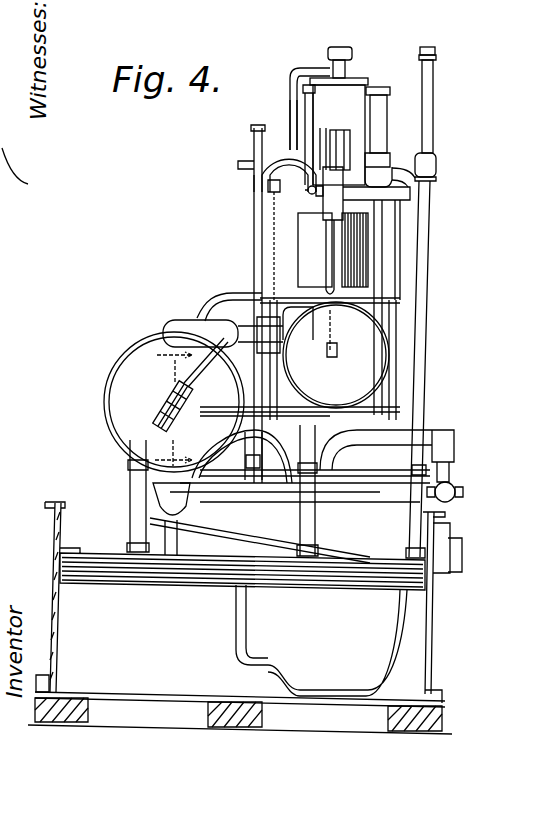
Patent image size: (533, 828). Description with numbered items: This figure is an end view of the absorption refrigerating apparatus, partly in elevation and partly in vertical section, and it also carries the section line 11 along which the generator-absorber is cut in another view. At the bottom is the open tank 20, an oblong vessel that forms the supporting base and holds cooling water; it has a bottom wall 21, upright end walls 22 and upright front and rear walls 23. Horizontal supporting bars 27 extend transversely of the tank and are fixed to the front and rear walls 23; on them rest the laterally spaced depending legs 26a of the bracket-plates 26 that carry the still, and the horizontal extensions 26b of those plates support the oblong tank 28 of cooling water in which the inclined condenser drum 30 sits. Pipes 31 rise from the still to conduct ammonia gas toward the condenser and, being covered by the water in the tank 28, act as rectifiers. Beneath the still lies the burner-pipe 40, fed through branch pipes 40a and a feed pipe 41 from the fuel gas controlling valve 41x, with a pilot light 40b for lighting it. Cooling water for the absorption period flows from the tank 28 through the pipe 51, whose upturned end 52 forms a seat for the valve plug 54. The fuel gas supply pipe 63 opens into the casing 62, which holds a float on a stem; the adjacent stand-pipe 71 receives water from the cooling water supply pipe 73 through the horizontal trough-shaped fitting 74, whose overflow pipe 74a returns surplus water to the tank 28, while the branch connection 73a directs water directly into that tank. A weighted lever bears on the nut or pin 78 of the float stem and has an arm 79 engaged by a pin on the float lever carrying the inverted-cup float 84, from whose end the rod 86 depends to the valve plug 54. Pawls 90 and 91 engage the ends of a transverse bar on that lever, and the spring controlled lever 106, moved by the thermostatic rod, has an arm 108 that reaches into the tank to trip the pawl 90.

The section line 11— 11 is at (177, 406).
The open tank 20 is at (47, 547).
The bottom wall 21 is at (170, 698).
The upright end wall 22 is at (242, 599).
The upright front and rear wall 23 is at (52, 613).
The bracket-plate 26 is at (112, 432).
The depending leg 26a is at (130, 524).
The horizontal extension 26b is at (340, 420).
The horizontal supporting bar 27 is at (98, 584).
The oblong tank 28 is at (400, 343).
The condenser drum 30 is at (364, 364).
The pipe 31 is at (208, 300).
The burner-pipe 40 is at (190, 510).
The branch pipe 40a is at (352, 494).
The pilot light 40b is at (270, 472).
The feed pipe 41 is at (252, 251).
The fuel gas controlling valve 41x is at (361, 76).
The pipe 51 is at (170, 326).
The upturned end 52 is at (317, 317).
The valve plug 54 is at (340, 297).
The casing 62 is at (345, 100).
The fuel gas supply pipe 63 is at (290, 72).
The stand-pipe 71 is at (296, 104).
The cooling water supply pipe 73 is at (433, 141).
The branch connection 73a is at (381, 247).
The horizontal trough-shaped fitting 74 is at (392, 86).
The overflow pipe 74a is at (388, 112).
The nut or pin 78 is at (328, 262).
The arm 79 is at (345, 192).
The float 84 is at (304, 228).
The rod 86 is at (335, 250).
The pawl 90 is at (326, 140).
The pawl 91 is at (347, 140).
The spring controlled lever 106 is at (227, 362).
The arm 108 is at (311, 192).